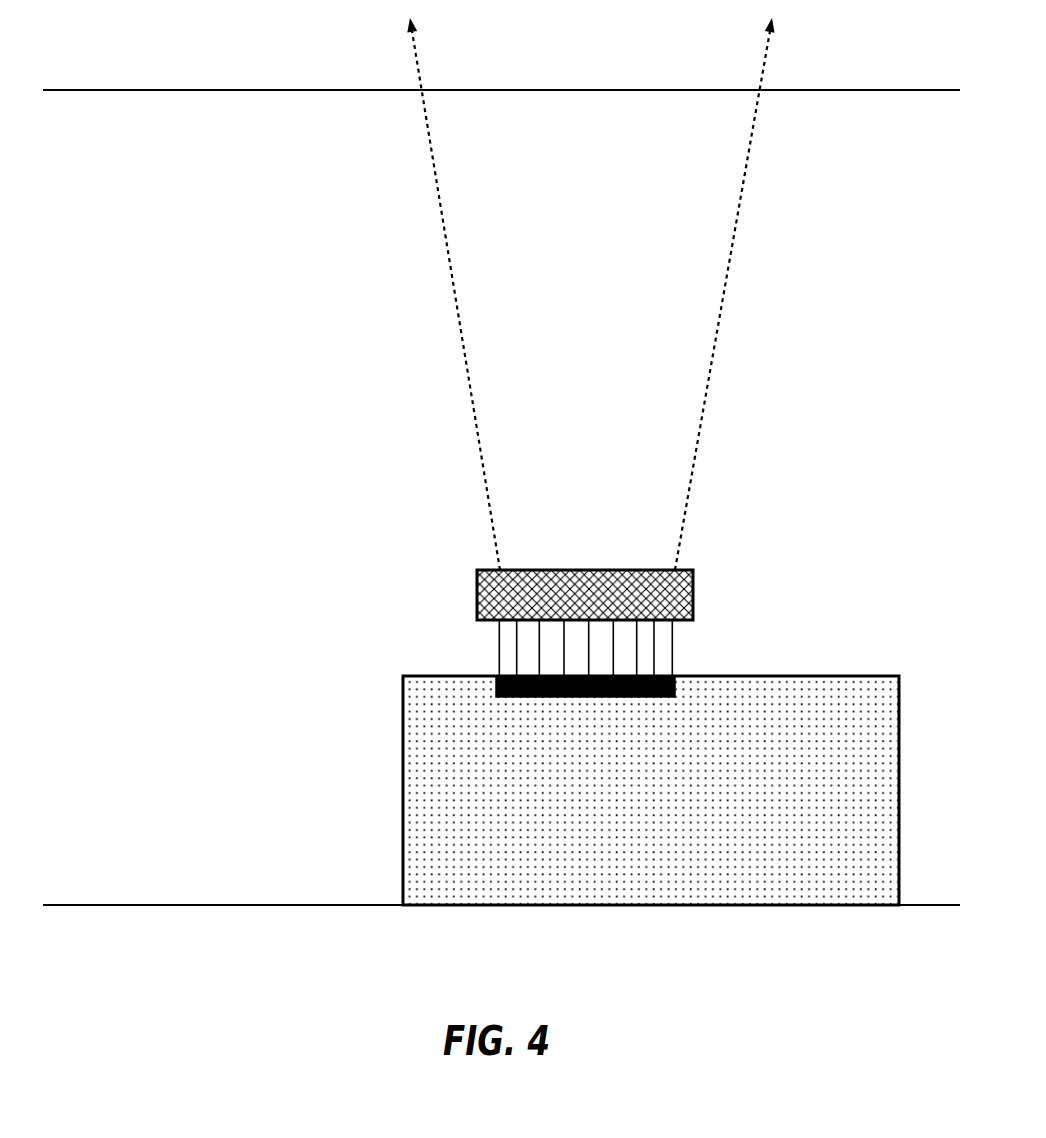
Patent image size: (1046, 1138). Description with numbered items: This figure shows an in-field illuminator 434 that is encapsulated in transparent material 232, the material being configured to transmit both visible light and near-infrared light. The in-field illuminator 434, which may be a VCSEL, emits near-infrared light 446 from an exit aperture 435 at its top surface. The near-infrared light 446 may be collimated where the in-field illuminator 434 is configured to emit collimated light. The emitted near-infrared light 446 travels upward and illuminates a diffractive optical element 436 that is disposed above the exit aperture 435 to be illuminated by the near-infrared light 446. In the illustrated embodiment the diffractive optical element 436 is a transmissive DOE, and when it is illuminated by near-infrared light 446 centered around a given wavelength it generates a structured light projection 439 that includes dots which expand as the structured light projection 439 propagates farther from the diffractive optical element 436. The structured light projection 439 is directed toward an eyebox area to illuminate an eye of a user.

The transparent material 232 is at (927, 130).
The in-field illuminator 434 is at (863, 876).
The exit aperture 435 is at (647, 708).
The diffractive optical element 436 is at (697, 592).
The structured light projection 439 is at (672, 424).
The near-infrared light 446 is at (478, 652).